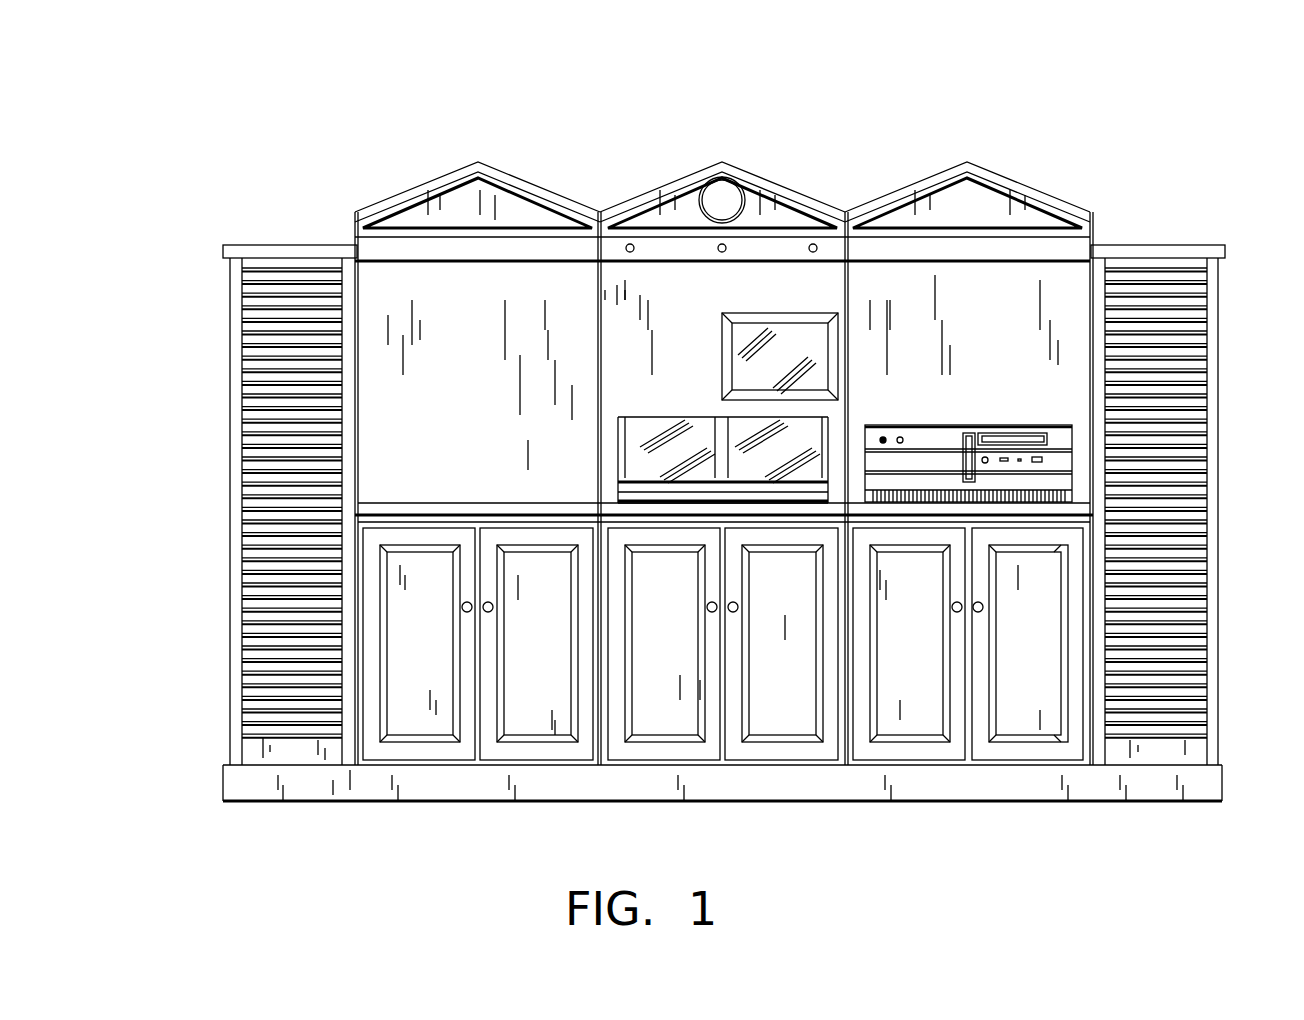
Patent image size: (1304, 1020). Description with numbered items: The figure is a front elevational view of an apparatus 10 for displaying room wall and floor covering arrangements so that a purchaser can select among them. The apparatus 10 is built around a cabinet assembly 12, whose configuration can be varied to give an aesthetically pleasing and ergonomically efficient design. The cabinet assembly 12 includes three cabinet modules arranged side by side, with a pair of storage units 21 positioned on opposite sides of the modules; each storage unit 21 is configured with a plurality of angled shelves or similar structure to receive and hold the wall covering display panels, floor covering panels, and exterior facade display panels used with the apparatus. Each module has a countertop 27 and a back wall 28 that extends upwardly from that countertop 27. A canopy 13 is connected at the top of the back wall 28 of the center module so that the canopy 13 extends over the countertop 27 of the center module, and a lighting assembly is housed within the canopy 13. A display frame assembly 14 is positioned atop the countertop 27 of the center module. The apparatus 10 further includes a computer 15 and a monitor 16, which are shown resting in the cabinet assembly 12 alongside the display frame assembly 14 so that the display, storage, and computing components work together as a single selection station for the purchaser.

The apparatus 10 is at (895, 96).
The cabinet assembly 12 is at (913, 803).
The canopy 13 is at (753, 172).
The display frame assembly 14 is at (702, 415).
The computer 15 is at (885, 425).
The monitor 16 is at (778, 313).
The storage units 21 is at (230, 290).
The countertop 27 is at (385, 503).
The back wall 28 is at (477, 287).